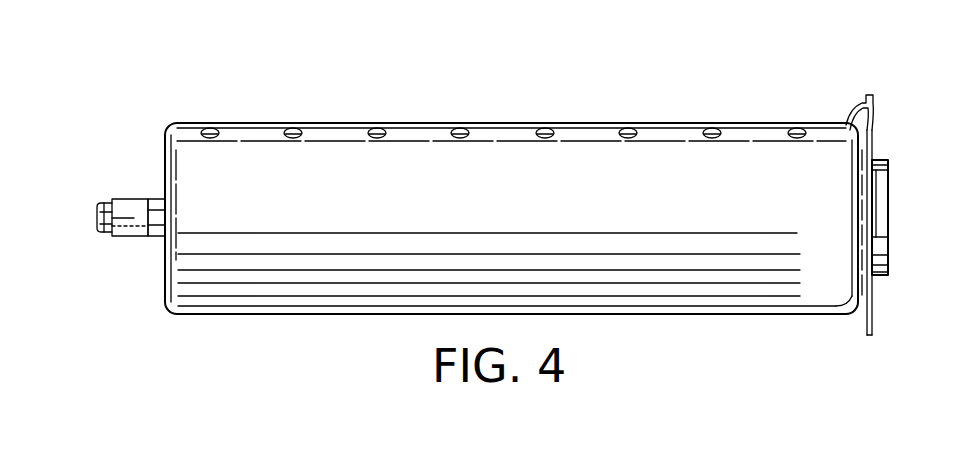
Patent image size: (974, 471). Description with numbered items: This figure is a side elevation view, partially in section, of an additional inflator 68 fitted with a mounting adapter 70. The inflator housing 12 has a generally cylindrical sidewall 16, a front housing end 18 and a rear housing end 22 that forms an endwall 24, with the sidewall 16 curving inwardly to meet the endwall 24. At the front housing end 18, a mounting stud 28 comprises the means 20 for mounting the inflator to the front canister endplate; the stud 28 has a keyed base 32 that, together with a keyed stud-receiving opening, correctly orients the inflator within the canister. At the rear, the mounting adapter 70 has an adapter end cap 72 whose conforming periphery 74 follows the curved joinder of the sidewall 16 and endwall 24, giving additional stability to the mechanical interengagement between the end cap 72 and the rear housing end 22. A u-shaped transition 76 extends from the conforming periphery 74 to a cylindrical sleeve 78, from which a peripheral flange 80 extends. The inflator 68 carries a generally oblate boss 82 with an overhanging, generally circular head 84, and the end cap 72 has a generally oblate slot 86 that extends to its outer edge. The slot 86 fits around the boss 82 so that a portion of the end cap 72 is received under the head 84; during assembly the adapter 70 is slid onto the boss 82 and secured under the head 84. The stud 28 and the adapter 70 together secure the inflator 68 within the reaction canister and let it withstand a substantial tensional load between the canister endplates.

The inflator housing 12 is at (190, 123).
The cylindrical sidewall 16 is at (322, 121).
The front housing end 18 is at (163, 152).
The means for mounting 20 is at (120, 240).
The rear housing end 22 is at (866, 270).
The endwall 24 is at (866, 280).
The mounting stud 28 is at (130, 240).
The keyed base 32 is at (152, 199).
The inflator 68 is at (412, 82).
The mounting adapter 70 is at (858, 230).
The adapter end cap 72 is at (874, 292).
The conforming periphery 74 is at (874, 130).
The u-shaped transition 76 is at (851, 116).
The cylindrical sleeve 78 is at (856, 106).
The peripheral flange 80 is at (872, 96).
The boss 82 is at (864, 215).
The circular head 84 is at (890, 193).
The oblate slot 86 is at (866, 180).